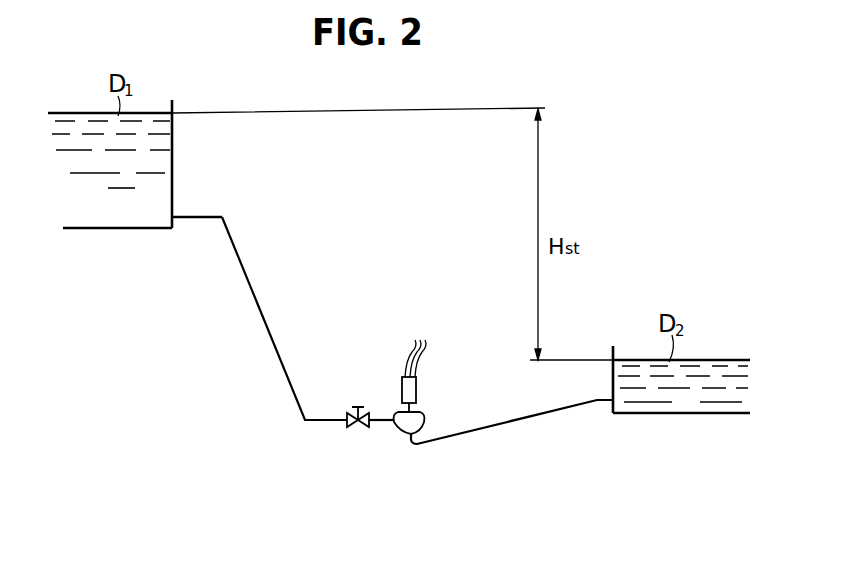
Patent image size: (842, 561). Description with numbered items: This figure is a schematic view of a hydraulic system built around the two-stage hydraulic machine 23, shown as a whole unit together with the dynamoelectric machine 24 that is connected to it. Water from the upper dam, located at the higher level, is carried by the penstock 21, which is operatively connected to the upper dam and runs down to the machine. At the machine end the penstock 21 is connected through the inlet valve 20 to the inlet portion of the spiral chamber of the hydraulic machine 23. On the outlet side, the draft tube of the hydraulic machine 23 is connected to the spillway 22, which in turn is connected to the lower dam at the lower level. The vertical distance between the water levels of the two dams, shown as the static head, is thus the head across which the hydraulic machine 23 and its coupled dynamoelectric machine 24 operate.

The inlet valve 20 is at (360, 428).
The penstock 21 is at (245, 272).
The spillway 22 is at (508, 425).
The two-stage hydraulic machine 23 is at (415, 418).
The dynamoelectric machine 24 is at (414, 388).